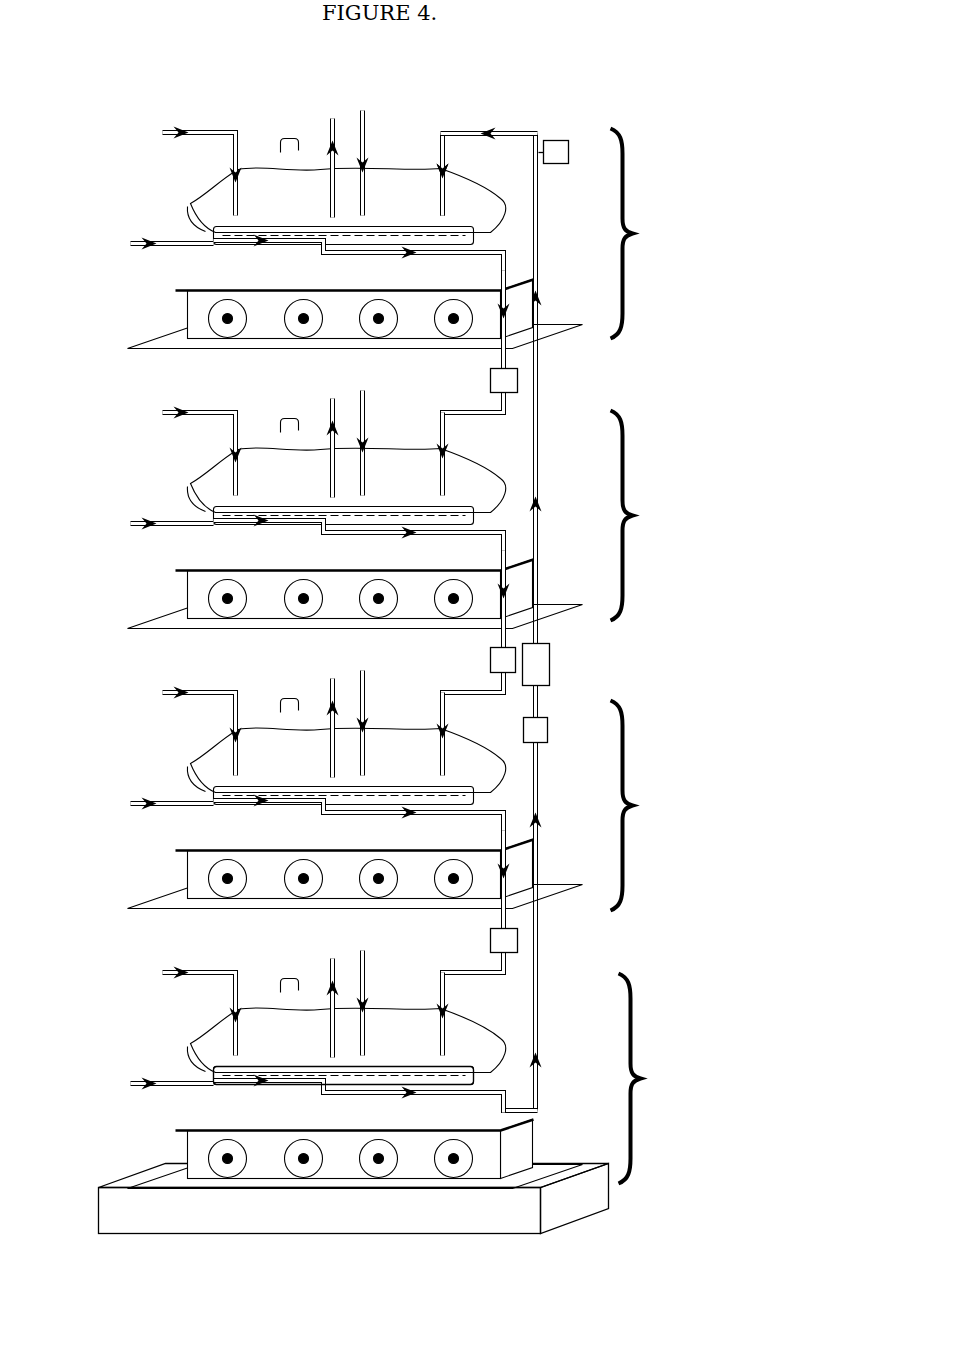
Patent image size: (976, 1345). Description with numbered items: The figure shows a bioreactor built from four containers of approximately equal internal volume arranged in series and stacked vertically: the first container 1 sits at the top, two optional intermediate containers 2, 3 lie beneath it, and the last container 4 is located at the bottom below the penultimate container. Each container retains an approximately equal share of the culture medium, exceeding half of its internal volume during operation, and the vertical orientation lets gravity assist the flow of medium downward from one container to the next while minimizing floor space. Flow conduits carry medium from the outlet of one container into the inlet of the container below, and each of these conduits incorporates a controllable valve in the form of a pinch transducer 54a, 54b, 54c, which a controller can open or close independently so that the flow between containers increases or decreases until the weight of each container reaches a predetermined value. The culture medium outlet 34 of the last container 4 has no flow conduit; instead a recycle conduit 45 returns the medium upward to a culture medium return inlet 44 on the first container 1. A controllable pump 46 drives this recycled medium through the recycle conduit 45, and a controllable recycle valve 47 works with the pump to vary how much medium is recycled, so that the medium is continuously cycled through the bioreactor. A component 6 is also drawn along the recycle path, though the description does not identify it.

The first container 1 is at (632, 233).
The intermediate container 2 is at (632, 517).
The intermediate container 3 is at (632, 805).
The last container 4 is at (640, 1078).
The valve 6 is at (568, 152).
The culture medium outlet 34 is at (322, 1068).
The culture medium return inlet 44 is at (438, 166).
The recycle conduit 45 is at (520, 131).
The controllable pump 46 is at (533, 672).
The controllable recycle valve 47 is at (535, 730).
The pinch transducer 54a is at (517, 380).
The pinch transducer 54b is at (503, 660).
The pinch transducer 54c is at (517, 940).